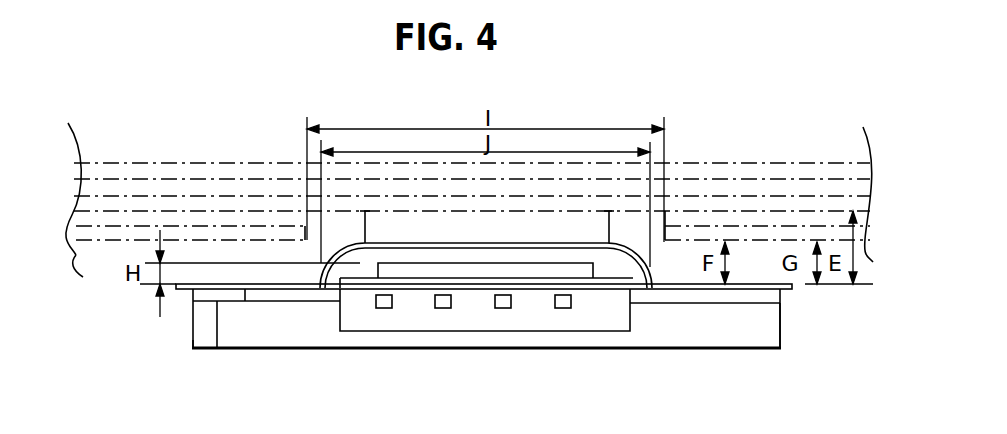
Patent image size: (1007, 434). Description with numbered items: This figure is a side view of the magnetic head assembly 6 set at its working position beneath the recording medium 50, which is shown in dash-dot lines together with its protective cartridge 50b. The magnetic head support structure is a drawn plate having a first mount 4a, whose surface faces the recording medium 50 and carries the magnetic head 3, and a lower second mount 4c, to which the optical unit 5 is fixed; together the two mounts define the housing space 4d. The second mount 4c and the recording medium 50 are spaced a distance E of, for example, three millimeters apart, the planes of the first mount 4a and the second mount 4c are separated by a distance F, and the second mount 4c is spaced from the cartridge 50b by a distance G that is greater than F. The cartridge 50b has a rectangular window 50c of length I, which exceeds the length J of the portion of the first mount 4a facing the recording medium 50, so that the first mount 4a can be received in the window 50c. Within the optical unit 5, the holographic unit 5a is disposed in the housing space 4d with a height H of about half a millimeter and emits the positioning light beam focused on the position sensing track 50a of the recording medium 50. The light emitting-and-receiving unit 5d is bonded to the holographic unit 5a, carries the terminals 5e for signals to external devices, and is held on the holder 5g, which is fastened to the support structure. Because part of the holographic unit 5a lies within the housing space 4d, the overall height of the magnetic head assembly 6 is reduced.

The magnetic head 3 is at (365, 227).
The first mount 4a is at (633, 285).
The second mount 4c is at (717, 290).
The housing space 4d is at (342, 270).
The optical unit 5 is at (245, 338).
The holographic unit 5a is at (468, 273).
The light emitting-and-receiving unit 5d is at (614, 322).
The terminals 5e is at (380, 308).
The holder 5g is at (772, 332).
The magnetic head assembly 6 is at (188, 340).
The recording medium 50 is at (200, 195).
The position sensing track 50a is at (85, 282).
The cartridge 50b is at (108, 236).
The rectangular window 50c is at (658, 227).